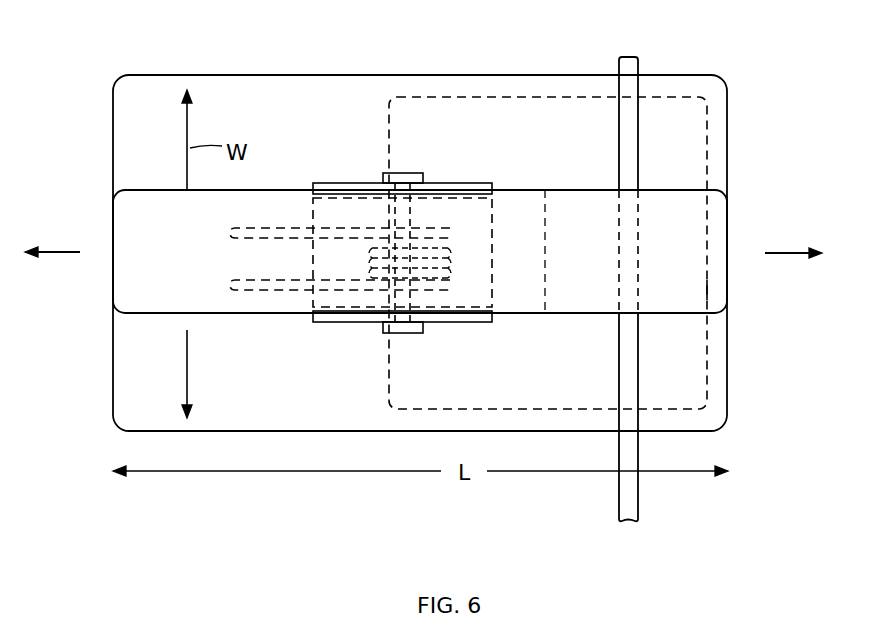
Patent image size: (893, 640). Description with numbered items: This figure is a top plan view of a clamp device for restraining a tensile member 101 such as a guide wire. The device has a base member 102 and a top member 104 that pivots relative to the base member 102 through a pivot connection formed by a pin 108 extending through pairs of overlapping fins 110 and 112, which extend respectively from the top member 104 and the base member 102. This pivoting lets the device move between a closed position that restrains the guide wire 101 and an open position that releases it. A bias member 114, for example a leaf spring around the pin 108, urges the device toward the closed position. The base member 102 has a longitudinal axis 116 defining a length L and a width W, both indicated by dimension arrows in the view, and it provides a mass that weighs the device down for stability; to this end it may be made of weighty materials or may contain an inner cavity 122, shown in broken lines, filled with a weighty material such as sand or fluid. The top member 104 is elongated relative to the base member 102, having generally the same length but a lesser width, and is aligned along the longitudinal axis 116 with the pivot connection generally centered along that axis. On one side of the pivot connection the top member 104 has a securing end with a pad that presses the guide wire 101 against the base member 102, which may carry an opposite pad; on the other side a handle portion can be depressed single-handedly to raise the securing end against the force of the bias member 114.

The tensile member 101 is at (633, 69).
The base member 102 is at (263, 75).
The top member 104 is at (125, 285).
The pin 108 is at (423, 175).
The fins 110 is at (470, 198).
The fins 112 is at (492, 186).
The bias member 114 is at (288, 227).
The longitudinal axis 116 is at (781, 253).
The inner cavity 122 is at (556, 97).